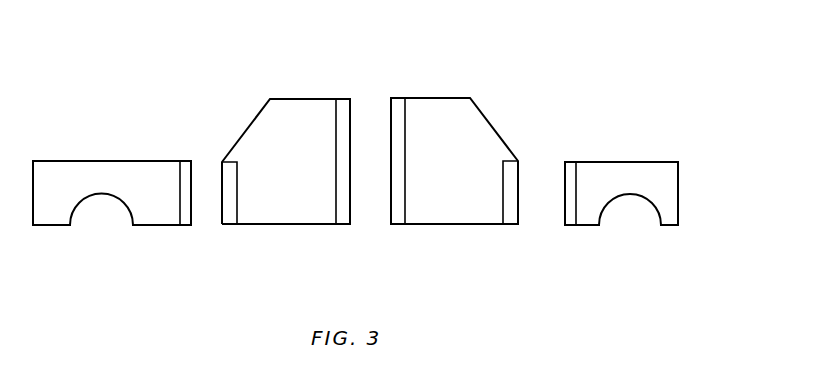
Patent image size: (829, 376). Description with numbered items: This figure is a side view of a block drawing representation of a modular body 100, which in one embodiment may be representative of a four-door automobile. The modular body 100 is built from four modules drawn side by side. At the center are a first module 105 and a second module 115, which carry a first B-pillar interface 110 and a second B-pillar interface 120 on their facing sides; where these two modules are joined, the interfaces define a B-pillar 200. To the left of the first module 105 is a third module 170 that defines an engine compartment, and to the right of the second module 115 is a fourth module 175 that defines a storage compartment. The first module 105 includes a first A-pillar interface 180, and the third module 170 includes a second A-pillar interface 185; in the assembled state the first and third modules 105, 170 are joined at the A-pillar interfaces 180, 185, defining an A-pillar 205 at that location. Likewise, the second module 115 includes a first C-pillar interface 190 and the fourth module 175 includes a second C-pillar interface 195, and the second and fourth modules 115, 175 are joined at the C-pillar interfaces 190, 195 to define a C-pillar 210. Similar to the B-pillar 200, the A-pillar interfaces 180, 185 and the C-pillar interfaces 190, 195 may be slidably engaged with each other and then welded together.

The modular body 100 is at (606, 53).
The first module 105 is at (292, 135).
The first B-pillar interface 110 is at (352, 117).
The second module 115 is at (445, 134).
The second B-pillar interface 120 is at (391, 140).
The third module 170 is at (112, 163).
The fourth module 175 is at (610, 159).
The first A-pillar interface 180 is at (238, 187).
The second A-pillar interface 185 is at (179, 188).
The first C-pillar interface 190 is at (502, 191).
The second C-pillar interface 195 is at (619, 193).
The B-pillar 200 is at (402, 227).
The A-pillar 205 is at (238, 227).
The C-pillar 210 is at (572, 227).